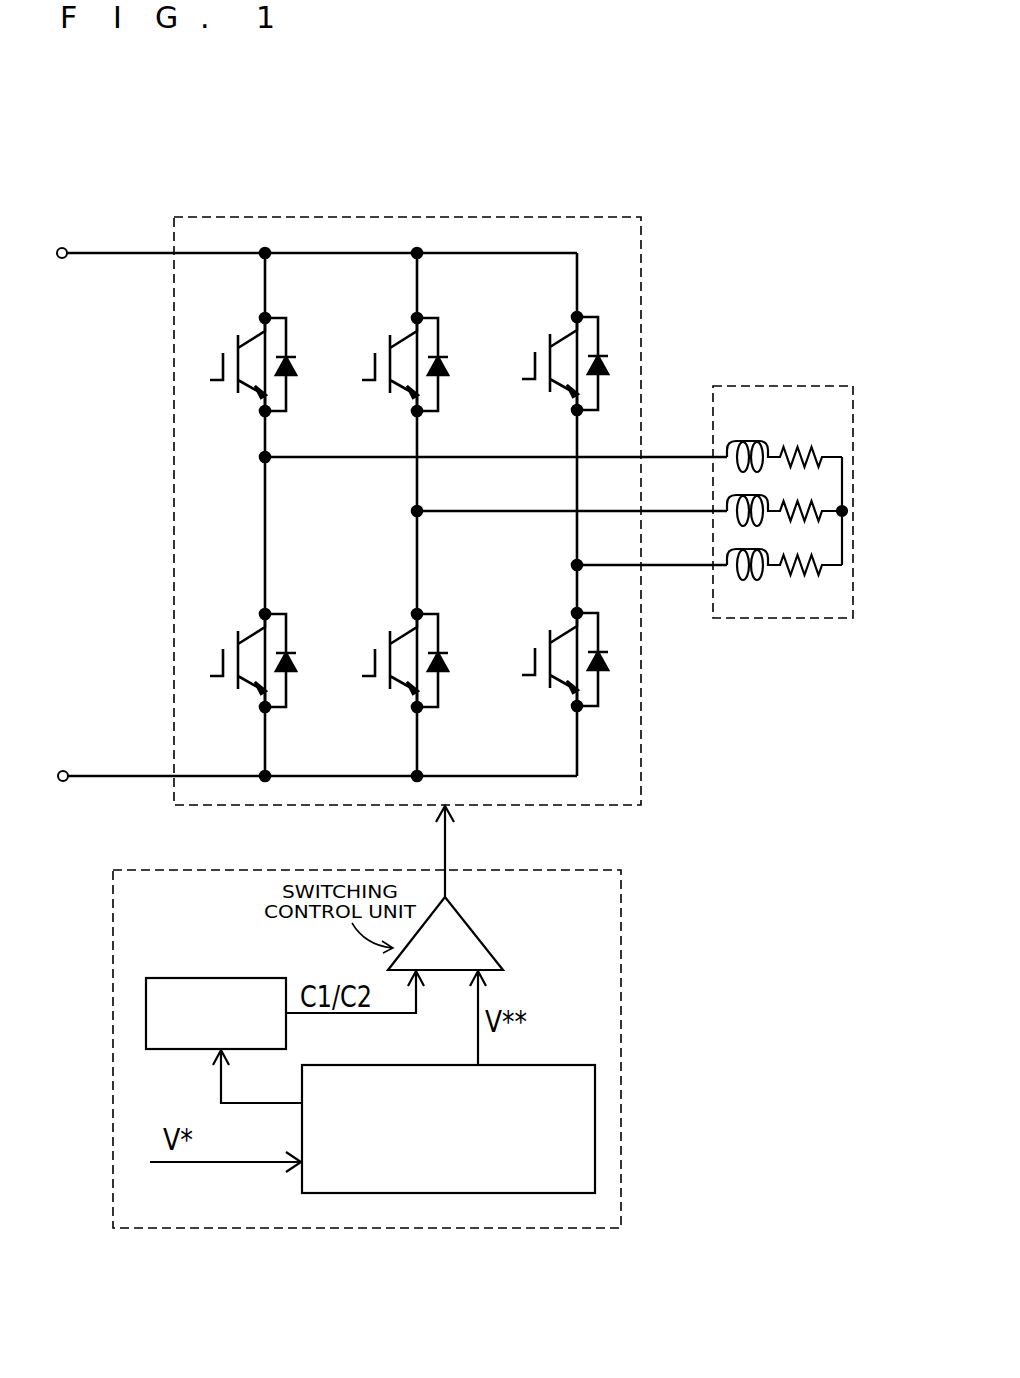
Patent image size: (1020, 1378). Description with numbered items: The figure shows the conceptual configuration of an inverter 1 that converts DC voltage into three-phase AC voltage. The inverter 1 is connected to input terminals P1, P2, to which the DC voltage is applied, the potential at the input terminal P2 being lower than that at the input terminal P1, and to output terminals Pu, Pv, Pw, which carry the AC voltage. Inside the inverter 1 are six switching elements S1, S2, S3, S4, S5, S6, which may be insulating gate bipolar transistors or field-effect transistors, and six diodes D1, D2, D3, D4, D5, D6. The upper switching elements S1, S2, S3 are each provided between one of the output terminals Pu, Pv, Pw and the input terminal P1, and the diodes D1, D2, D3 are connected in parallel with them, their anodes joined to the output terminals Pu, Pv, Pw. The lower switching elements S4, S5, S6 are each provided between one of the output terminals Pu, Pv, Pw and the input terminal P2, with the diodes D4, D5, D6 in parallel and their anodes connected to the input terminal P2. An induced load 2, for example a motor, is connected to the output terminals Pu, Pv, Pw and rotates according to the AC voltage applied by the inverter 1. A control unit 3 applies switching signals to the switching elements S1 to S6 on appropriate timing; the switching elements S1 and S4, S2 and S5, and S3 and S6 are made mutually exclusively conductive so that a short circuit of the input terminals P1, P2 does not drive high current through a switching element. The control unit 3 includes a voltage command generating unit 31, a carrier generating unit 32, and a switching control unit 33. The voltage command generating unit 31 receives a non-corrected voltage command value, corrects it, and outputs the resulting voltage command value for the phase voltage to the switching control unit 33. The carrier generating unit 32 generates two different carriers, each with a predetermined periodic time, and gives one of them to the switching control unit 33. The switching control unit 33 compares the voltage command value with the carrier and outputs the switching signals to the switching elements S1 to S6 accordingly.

The inverter 1 is at (478, 215).
The induced load 2 is at (822, 385).
The control unit 3 is at (621, 908).
The voltage command generating unit 31 is at (563, 1064).
The carrier generating unit 32 is at (240, 978).
The switching control unit 33 is at (488, 944).
The switching element S1 is at (240, 371).
The switching element S2 is at (392, 371).
The switching element S3 is at (552, 369).
The switching element S4 is at (240, 658).
The switching element S5 is at (392, 658).
The switching element S6 is at (552, 656).
The diode D1 is at (300, 364).
The diode D2 is at (448, 364).
The diode D3 is at (607, 363).
The diode D4 is at (298, 660).
The diode D5 is at (449, 660).
The diode D6 is at (608, 659).
The input terminal P1 is at (62, 248).
The input terminal P2 is at (66, 771).
The output terminal Pu is at (262, 457).
The output terminal Pv is at (417, 511).
The output terminal Pw is at (575, 565).